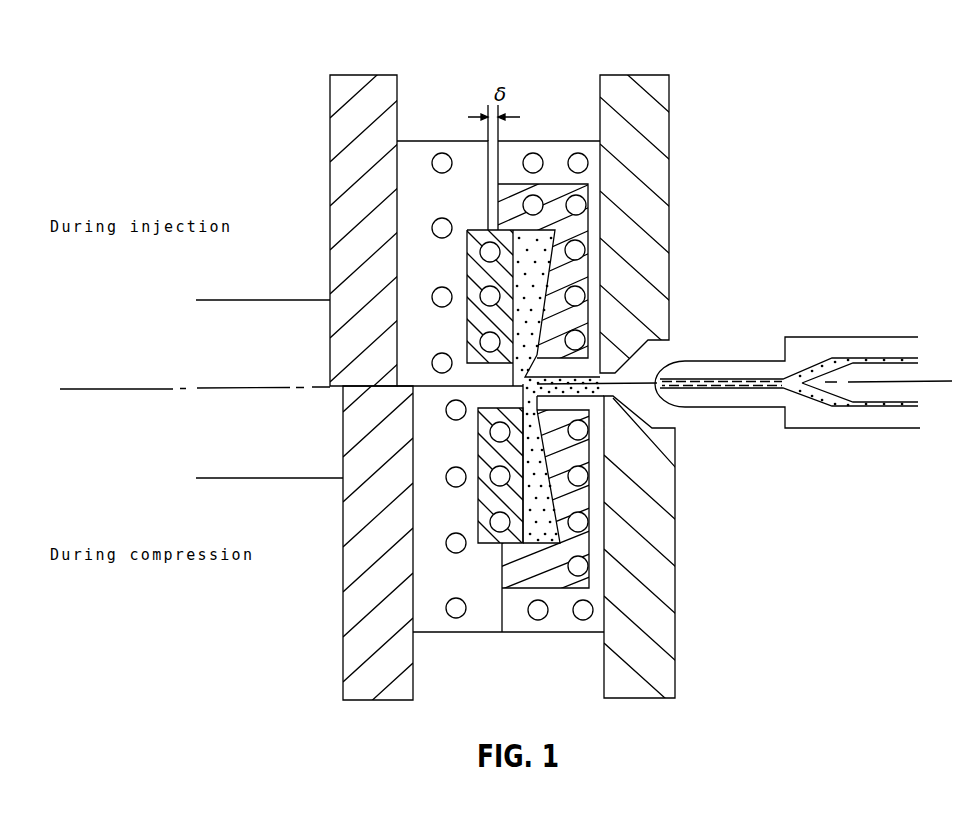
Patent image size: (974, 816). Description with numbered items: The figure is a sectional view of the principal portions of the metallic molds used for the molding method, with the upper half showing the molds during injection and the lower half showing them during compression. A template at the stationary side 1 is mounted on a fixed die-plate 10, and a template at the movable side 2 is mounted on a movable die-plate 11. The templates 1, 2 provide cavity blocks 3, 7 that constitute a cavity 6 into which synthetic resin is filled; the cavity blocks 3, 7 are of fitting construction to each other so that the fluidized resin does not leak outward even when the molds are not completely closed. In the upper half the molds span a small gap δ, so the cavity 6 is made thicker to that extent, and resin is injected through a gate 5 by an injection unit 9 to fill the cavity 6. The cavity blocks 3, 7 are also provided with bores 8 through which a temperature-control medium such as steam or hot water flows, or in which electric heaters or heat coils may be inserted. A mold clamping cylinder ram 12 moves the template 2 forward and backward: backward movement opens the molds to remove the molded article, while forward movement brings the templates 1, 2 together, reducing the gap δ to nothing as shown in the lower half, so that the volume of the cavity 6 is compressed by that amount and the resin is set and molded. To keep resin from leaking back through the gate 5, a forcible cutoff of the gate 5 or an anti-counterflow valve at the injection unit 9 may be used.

The template at the stationary side 1 is at (546, 141).
The template at the movable side 2 is at (412, 141).
The cavity block 3 is at (477, 231).
The gate 5 is at (525, 373).
The cavity 6 is at (540, 290).
The cavity block 7 is at (587, 215).
The bores 8 is at (443, 153).
The injection unit 9 is at (812, 337).
The fixed die-plate 10 is at (637, 75).
The movable die-plate 11 is at (355, 75).
The mold clamping cylinder ram 12 is at (236, 300).